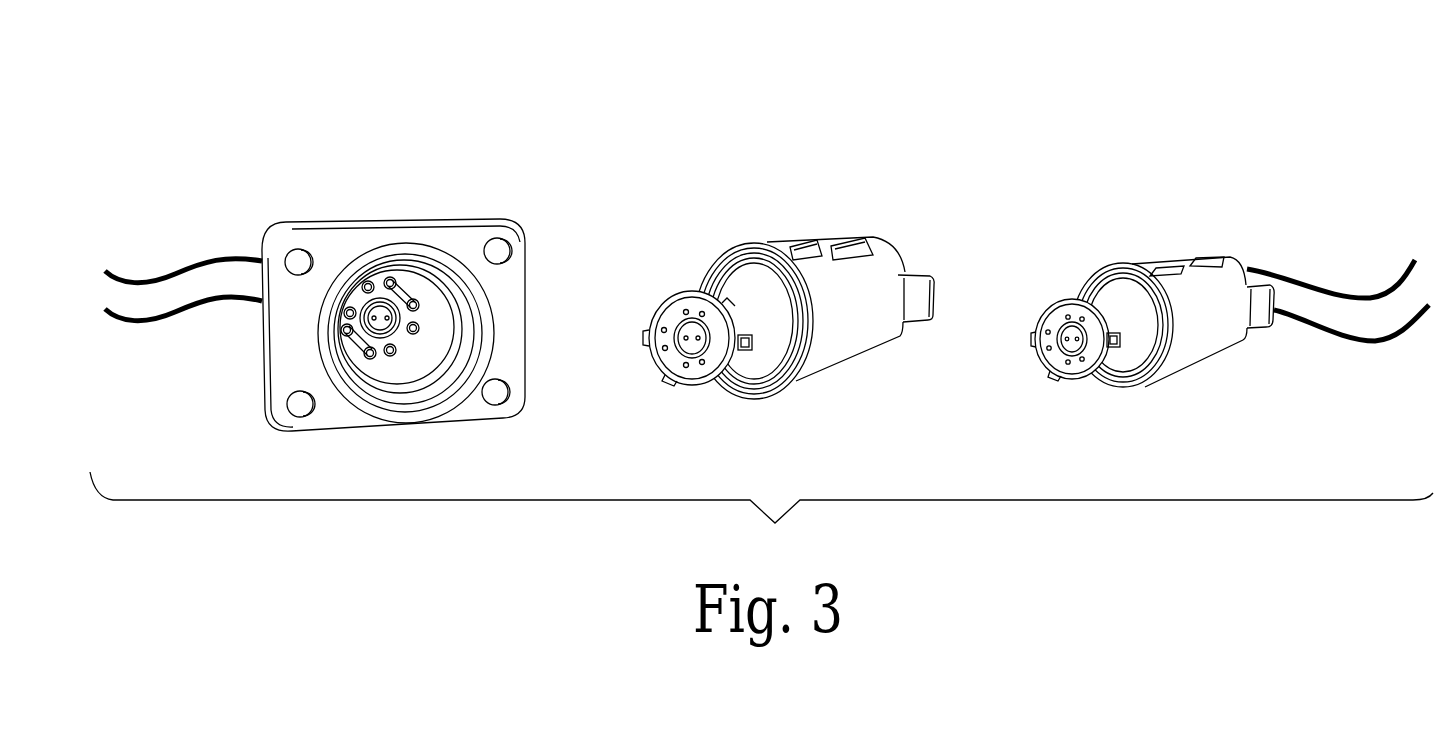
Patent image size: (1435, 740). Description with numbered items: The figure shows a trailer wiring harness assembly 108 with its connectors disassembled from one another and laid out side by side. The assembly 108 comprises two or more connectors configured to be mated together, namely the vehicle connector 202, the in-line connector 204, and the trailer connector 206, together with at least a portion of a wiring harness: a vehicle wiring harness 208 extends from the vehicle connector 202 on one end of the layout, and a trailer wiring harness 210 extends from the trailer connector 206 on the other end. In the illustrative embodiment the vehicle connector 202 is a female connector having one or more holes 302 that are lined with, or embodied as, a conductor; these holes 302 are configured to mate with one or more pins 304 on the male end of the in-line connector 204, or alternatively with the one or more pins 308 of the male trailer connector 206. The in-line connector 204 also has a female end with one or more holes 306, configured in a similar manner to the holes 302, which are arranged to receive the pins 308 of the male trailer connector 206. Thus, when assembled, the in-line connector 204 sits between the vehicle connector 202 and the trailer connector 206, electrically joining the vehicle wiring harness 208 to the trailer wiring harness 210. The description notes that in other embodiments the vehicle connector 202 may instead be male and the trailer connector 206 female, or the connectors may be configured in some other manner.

The trailer wiring harness assembly 108 is at (238, 146).
The vehicle connector 202 is at (470, 218).
The holes 302 is at (417, 287).
The vehicle wiring harness 208 is at (203, 253).
The holes 306 is at (915, 240).
The in-line connector 204 is at (777, 243).
The pins 304 is at (667, 293).
The trailer connector 206 is at (1147, 262).
The pins 308 is at (1057, 300).
The trailer wiring harness 210 is at (1307, 278).